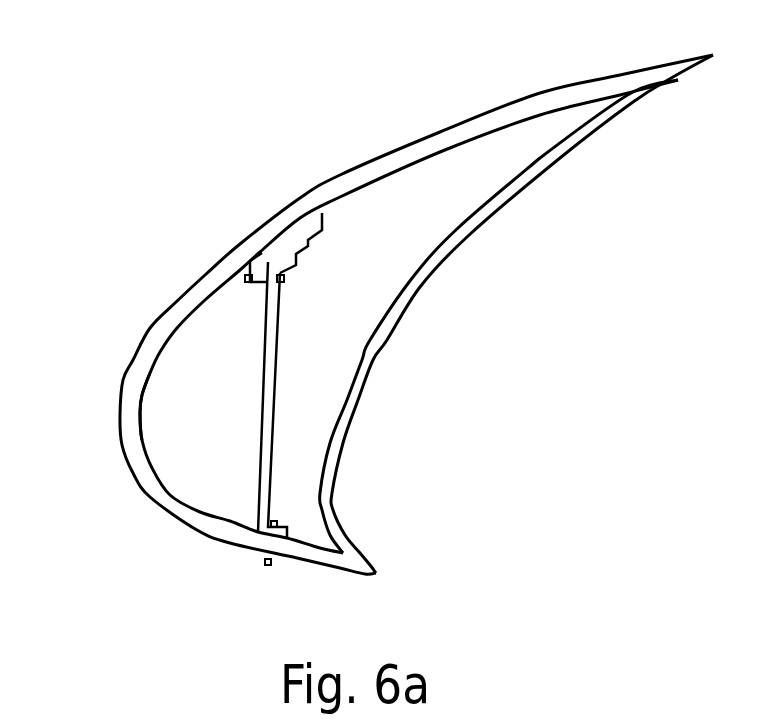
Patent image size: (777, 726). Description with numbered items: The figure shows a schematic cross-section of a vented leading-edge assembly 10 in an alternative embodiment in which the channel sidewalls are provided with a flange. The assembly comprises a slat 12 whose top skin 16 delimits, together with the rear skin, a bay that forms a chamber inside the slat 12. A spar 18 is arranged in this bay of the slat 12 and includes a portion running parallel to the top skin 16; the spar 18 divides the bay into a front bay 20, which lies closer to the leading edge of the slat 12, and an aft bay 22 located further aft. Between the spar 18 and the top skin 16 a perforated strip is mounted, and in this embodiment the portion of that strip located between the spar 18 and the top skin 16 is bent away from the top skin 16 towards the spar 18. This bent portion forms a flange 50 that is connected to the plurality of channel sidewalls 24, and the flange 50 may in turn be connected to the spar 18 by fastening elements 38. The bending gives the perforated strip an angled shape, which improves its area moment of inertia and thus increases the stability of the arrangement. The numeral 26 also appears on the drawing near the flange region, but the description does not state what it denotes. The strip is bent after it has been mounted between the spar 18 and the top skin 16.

The vented leading-edge assembly 10 is at (100, 284).
The slat 12 is at (162, 493).
The top skin 16 is at (363, 172).
The spar 18 is at (268, 387).
The front bay 20 is at (177, 382).
The aft bay 22 is at (482, 177).
The channel sidewalls 24 is at (279, 242).
The bracket mounting flange 26 is at (248, 266).
The fastening elements 38 is at (284, 279).
The flange 50 is at (262, 284).